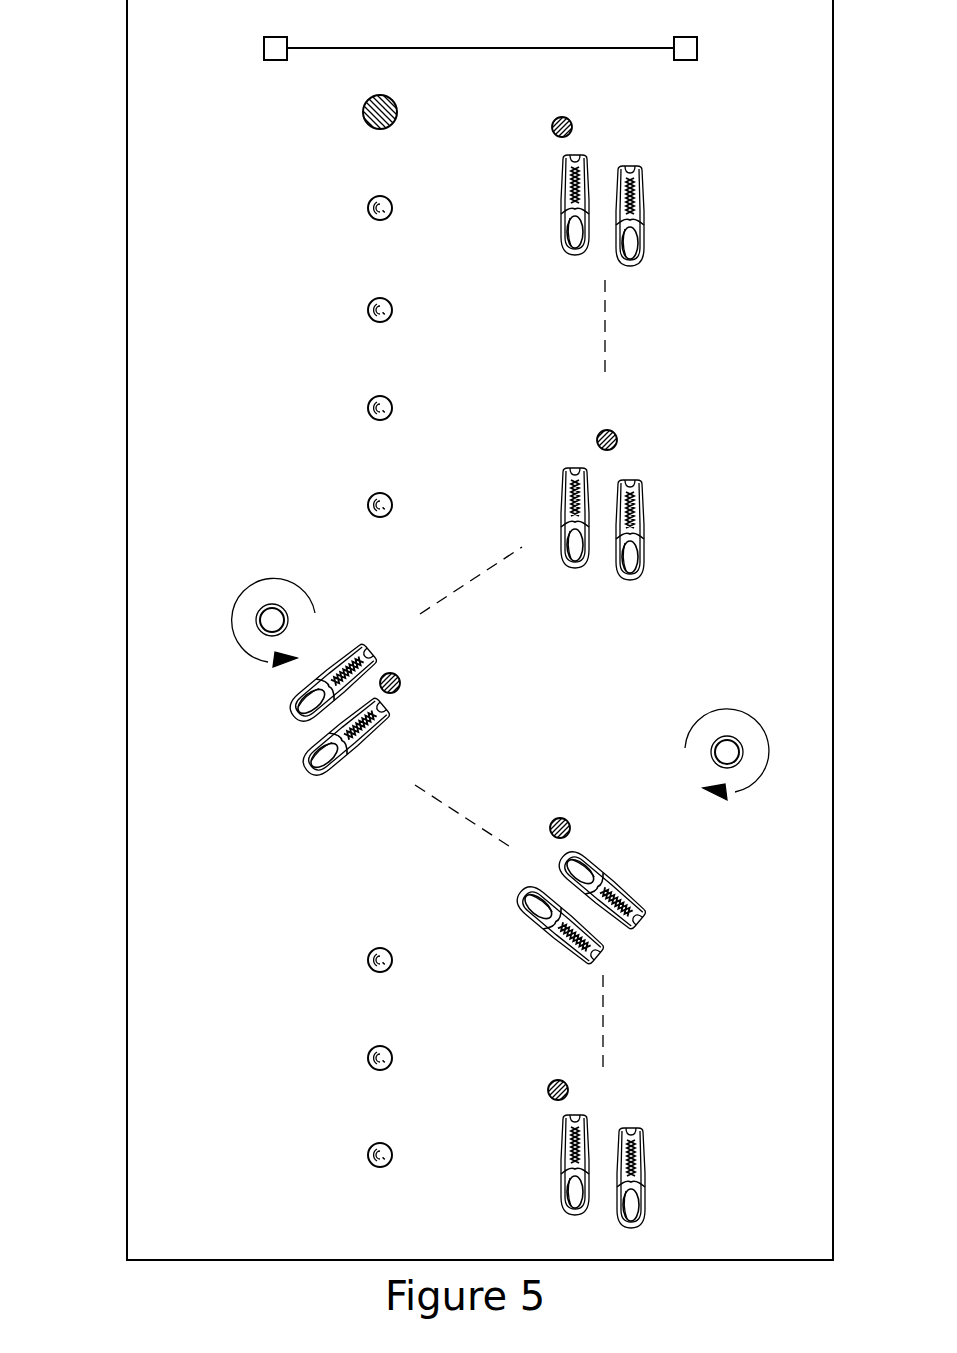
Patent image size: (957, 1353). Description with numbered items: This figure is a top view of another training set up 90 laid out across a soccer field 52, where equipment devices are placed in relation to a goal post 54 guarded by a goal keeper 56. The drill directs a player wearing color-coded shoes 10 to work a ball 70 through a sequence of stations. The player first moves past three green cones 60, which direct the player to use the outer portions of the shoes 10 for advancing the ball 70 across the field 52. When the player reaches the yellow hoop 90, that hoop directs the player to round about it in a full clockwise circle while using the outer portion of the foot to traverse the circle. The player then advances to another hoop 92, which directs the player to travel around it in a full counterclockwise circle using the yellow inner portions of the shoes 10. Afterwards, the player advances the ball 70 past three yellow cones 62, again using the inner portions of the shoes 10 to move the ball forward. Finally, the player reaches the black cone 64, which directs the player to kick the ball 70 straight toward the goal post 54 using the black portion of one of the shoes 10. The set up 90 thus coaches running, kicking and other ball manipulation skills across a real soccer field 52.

The shoes 10 is at (546, 153).
The field 52 is at (127, 160).
The goal post 54 is at (331, 49).
The goal keeper 56 is at (398, 100).
The green cones 60 is at (368, 960).
The yellow cones 62 is at (368, 308).
The black cone 64 is at (367, 208).
The ball 70 is at (571, 118).
The set up / yellow hoop 90 is at (713, 757).
The hoop 92 is at (284, 623).